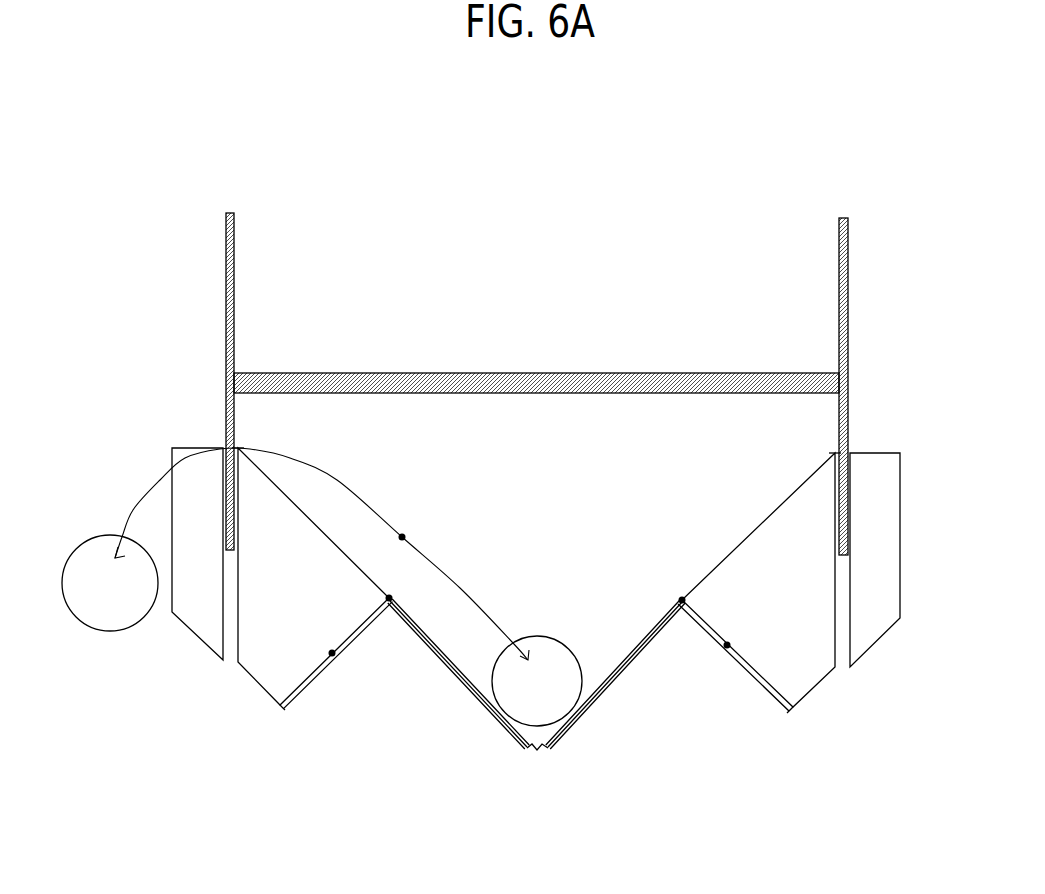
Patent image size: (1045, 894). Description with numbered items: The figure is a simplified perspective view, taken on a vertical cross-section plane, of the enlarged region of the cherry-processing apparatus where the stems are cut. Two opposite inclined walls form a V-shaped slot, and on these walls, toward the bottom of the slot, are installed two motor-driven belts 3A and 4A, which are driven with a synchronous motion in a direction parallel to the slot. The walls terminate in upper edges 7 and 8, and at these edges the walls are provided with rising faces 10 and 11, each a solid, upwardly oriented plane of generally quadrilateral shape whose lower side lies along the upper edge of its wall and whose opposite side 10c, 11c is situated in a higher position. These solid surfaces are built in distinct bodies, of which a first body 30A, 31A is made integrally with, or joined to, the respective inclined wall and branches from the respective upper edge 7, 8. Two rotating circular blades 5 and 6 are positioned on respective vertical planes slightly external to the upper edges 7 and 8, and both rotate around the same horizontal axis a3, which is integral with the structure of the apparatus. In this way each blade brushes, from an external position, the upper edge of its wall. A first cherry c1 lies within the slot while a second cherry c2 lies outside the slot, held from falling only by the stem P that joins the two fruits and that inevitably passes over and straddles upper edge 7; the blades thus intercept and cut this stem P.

The rotating circular blade 5 is at (228, 368).
The rotating circular blade 6 is at (842, 373).
The horizontal axis a3 is at (536, 372).
The rising face 10 is at (327, 542).
The opposite side of rising face 10c is at (251, 441).
The rising face 11 is at (752, 540).
The opposite side of rising face 11c is at (819, 446).
The upper edge 7 is at (389, 598).
The upper edge 8 is at (682, 600).
The stem P is at (402, 537).
The motor-driven belt 3A is at (467, 670).
The motor-driven belt 4A is at (643, 635).
The first body of solid surface 30A is at (332, 653).
The first body of solid surface 31A is at (727, 645).
The cherry c1 is at (537, 681).
The cherry c2 is at (110, 583).